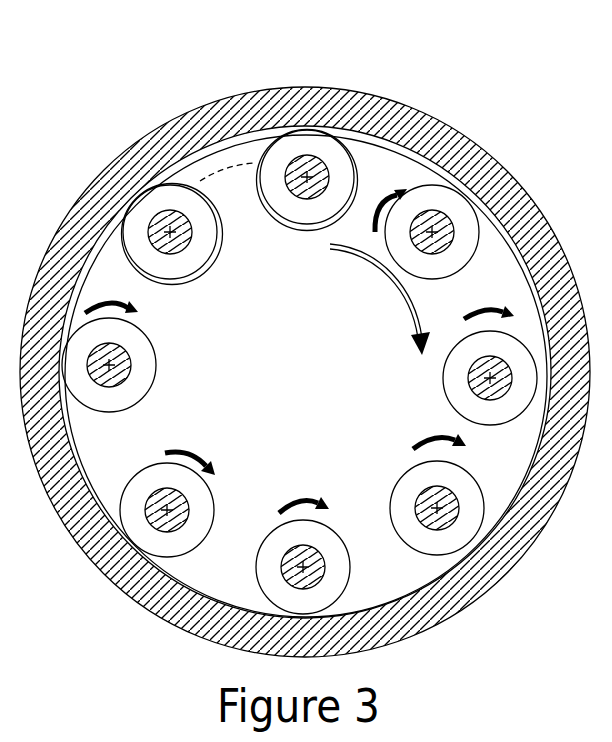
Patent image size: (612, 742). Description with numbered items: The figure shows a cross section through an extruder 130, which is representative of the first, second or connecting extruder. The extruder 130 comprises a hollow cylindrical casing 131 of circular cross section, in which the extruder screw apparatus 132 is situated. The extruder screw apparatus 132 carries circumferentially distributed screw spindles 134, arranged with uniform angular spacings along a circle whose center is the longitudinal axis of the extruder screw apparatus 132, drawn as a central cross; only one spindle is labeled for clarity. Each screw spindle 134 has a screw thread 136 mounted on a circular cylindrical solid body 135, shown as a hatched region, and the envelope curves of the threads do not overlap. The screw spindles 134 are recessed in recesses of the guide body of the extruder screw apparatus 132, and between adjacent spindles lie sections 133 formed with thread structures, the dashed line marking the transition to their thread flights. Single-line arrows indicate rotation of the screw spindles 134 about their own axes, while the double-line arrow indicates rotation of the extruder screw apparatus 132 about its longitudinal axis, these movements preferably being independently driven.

The extruder 130 is at (326, 68).
The casing 131 is at (258, 102).
The extruder screw apparatus 132 is at (404, 176).
The section 133 is at (213, 170).
The screw spindle 134 is at (162, 463).
The circular cylindrical solid body 135 is at (188, 517).
The screw thread 136 is at (197, 485).